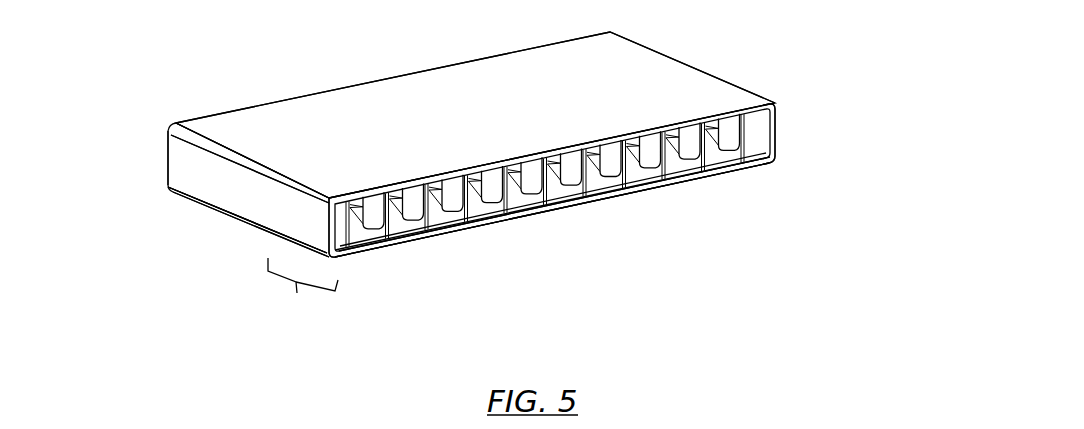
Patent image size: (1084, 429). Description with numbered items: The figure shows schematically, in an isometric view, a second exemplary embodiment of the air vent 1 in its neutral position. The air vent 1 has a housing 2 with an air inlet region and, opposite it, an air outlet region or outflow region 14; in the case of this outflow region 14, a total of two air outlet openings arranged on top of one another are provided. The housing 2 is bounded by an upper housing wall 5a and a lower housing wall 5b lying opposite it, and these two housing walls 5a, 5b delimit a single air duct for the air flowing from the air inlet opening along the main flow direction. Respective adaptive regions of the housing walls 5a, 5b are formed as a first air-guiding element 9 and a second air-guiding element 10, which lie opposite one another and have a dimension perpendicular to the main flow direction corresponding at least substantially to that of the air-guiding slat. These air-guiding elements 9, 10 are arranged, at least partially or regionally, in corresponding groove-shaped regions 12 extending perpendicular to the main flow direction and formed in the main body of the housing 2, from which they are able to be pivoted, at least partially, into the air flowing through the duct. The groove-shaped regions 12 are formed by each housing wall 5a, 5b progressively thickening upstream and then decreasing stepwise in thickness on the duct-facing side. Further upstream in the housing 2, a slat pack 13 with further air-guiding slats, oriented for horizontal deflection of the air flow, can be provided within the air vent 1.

The air vent 1 is at (347, 28).
The housing 2 is at (202, 177).
The upper housing wall 5a is at (570, 67).
The lower housing wall 5b is at (237, 218).
The air-guiding element 9 is at (770, 103).
The air-guiding element 10 is at (725, 153).
The groove-shaped region 12 is at (663, 178).
The slat pack 13 is at (728, 140).
The air outlet region 14 is at (303, 293).